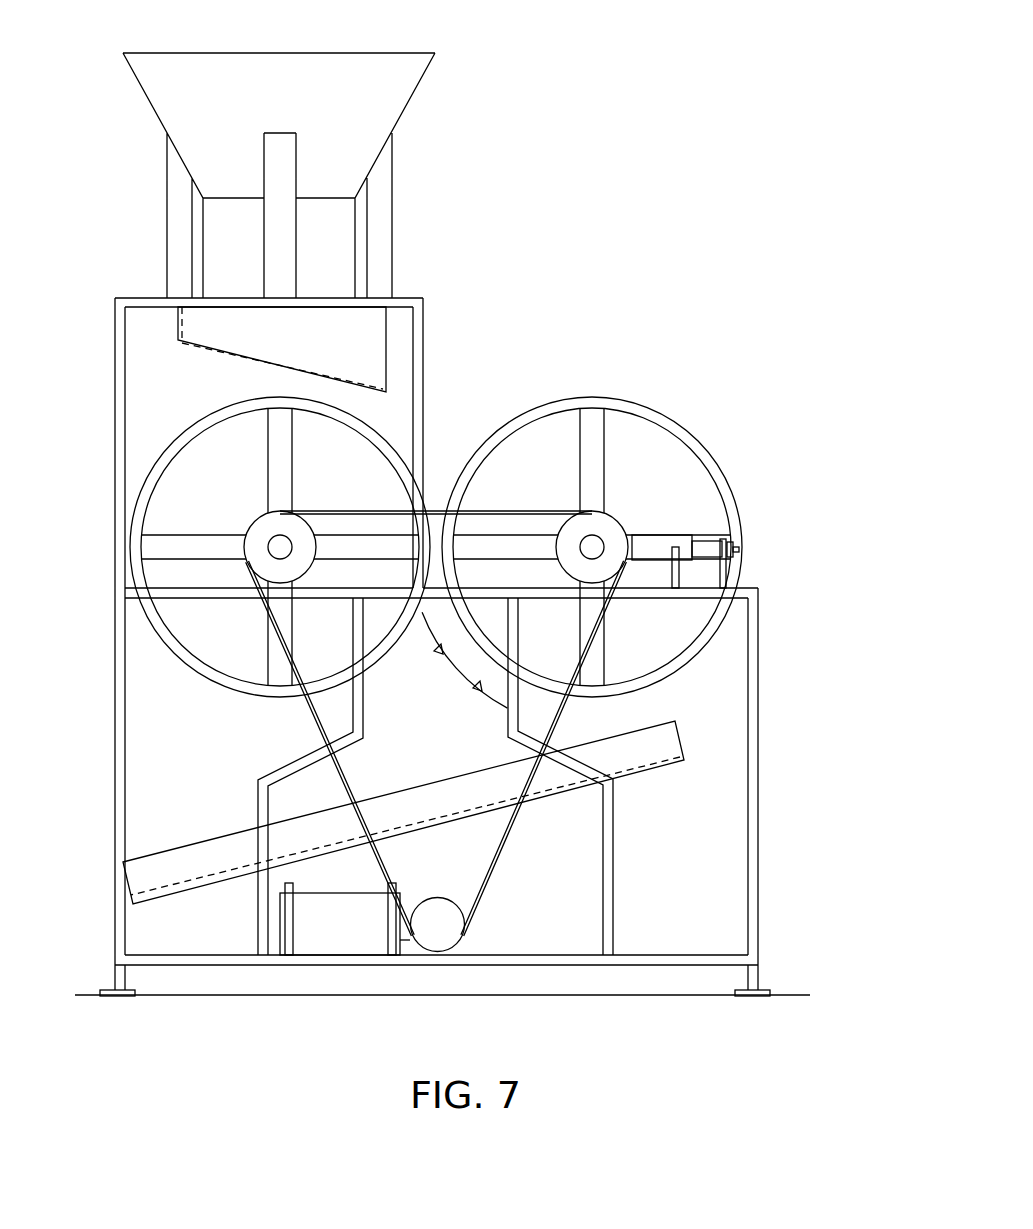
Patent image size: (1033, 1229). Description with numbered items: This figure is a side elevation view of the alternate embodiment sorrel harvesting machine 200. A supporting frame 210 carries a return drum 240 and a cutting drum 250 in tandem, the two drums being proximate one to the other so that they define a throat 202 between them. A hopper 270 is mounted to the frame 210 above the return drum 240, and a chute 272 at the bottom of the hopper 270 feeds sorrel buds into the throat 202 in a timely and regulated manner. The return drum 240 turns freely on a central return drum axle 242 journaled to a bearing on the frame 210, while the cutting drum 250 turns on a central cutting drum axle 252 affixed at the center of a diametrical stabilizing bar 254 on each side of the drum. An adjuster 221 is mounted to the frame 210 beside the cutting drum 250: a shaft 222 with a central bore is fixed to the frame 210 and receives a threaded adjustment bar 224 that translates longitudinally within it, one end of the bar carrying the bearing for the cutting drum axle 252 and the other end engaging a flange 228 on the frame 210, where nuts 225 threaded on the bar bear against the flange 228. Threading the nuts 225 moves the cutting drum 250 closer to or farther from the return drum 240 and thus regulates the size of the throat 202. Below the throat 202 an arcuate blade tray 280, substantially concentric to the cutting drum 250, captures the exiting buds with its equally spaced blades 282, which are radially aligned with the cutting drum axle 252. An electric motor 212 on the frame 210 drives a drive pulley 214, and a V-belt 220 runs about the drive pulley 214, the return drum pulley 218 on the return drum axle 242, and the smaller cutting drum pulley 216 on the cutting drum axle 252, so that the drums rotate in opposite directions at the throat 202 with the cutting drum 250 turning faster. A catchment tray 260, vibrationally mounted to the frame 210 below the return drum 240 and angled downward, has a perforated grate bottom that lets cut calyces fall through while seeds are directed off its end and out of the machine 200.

The sorrel harvesting machine 200 is at (620, 52).
The throat 202 is at (448, 435).
The supporting frame 210 is at (115, 325).
The electric motor 212 is at (330, 945).
The drive pulley 214 is at (422, 950).
The cutting drum pulley 216 is at (626, 532).
The return drum pulley 218 is at (255, 523).
The V-belt 220 is at (497, 855).
The adjuster 221 is at (670, 528).
The shaft 222 is at (658, 562).
The threaded adjustment bar 224 is at (735, 543).
The nuts 225 is at (738, 555).
The flange 228 is at (680, 575).
The return drum 240 is at (158, 460).
The return drum axle 242 is at (290, 537).
The cutting drum 250 is at (667, 421).
The cutting drum axle 252 is at (600, 535).
The diametrical stabilizing bar 254 is at (580, 488).
The catchment tray 260 is at (205, 840).
The hopper 270 is at (410, 100).
The chute 272 is at (386, 343).
The blade tray 280 is at (465, 685).
The blades 282 is at (450, 665).